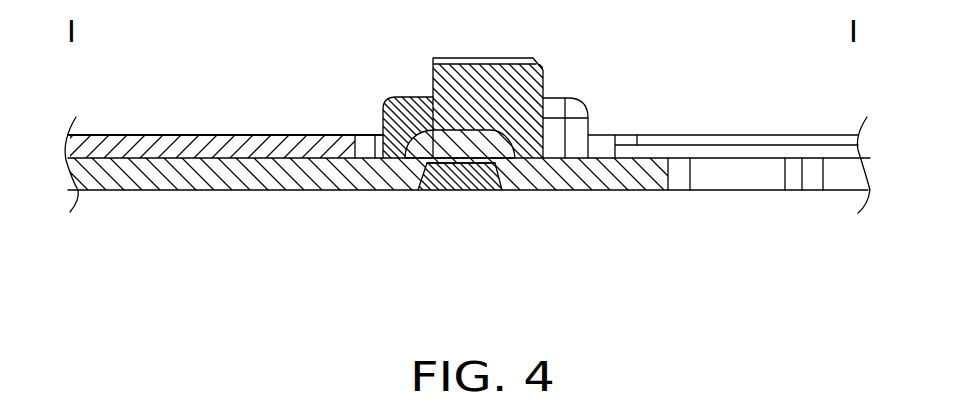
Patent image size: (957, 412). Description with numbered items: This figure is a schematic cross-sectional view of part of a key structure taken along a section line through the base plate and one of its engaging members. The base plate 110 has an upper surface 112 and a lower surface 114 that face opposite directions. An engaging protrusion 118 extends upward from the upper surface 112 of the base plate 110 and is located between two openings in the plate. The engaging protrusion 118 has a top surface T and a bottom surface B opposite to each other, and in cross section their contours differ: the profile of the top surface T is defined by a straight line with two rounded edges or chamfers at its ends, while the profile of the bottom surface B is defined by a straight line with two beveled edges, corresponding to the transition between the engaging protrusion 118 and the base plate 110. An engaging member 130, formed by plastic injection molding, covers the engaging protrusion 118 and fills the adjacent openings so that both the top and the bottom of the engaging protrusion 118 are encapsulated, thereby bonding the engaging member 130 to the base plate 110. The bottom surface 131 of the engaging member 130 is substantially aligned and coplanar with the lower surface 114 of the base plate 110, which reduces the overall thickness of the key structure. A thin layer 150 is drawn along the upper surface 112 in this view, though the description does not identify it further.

The base plate 110 is at (267, 182).
The upper surface 112 is at (200, 145).
The lower surface 114 is at (573, 200).
The engaging protrusion 118 is at (408, 98).
The engaging member 130 is at (515, 70).
The bottom surface of the engaging member 131 is at (449, 200).
The conductive layer 150 is at (122, 137).
The top surface T is at (466, 121).
The bottom surface B is at (472, 173).